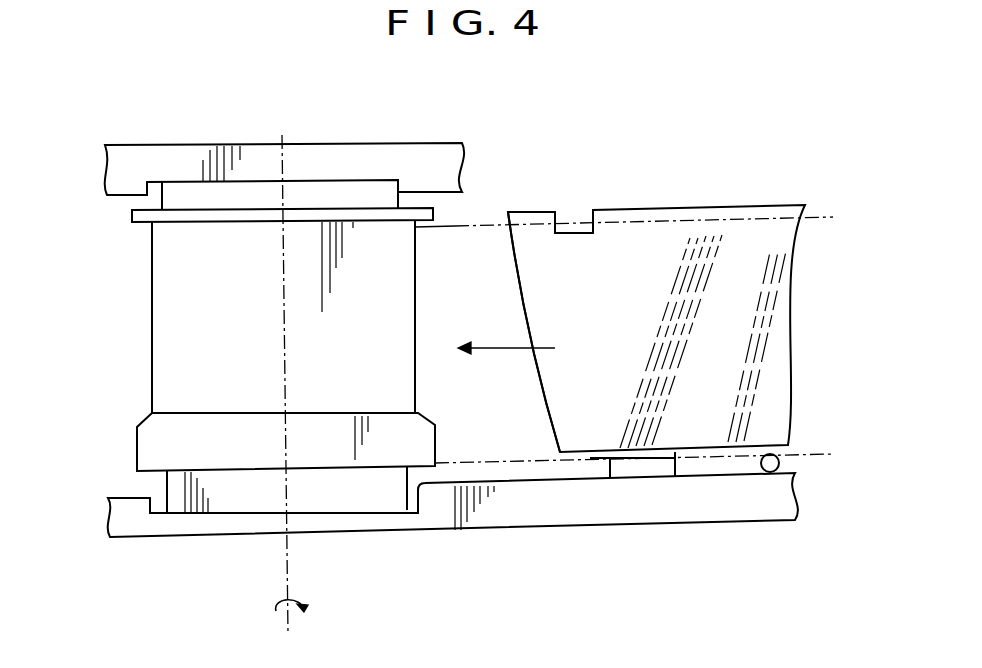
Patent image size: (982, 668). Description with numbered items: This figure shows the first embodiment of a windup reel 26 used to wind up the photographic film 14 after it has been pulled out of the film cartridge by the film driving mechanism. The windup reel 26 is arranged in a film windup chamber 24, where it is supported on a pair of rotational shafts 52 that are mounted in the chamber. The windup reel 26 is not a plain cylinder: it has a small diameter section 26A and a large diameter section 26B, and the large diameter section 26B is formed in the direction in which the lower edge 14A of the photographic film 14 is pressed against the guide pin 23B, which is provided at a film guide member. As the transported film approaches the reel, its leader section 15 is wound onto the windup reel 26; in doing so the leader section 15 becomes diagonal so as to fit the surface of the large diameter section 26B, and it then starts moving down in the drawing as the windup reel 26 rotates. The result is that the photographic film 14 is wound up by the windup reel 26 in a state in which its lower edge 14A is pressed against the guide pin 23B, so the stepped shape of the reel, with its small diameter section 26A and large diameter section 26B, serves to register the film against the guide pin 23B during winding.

The photographic film 14 is at (740, 203).
The lower edge 14A is at (612, 458).
The leader section 15 is at (550, 292).
The guide pin 23B is at (770, 473).
The film windup chamber 24 is at (149, 389).
The windup reel 26 is at (372, 290).
The small diameter section 26A is at (183, 308).
The large diameter section 26B is at (405, 450).
The rotational shaft 52 is at (360, 193).